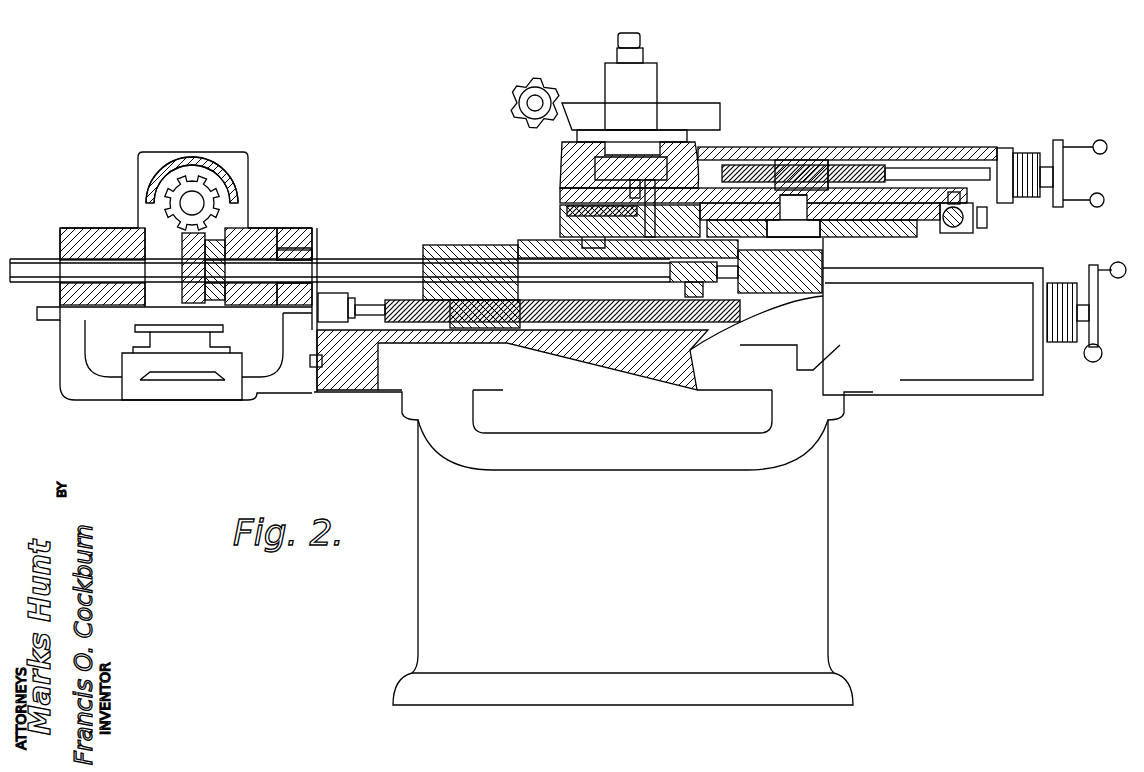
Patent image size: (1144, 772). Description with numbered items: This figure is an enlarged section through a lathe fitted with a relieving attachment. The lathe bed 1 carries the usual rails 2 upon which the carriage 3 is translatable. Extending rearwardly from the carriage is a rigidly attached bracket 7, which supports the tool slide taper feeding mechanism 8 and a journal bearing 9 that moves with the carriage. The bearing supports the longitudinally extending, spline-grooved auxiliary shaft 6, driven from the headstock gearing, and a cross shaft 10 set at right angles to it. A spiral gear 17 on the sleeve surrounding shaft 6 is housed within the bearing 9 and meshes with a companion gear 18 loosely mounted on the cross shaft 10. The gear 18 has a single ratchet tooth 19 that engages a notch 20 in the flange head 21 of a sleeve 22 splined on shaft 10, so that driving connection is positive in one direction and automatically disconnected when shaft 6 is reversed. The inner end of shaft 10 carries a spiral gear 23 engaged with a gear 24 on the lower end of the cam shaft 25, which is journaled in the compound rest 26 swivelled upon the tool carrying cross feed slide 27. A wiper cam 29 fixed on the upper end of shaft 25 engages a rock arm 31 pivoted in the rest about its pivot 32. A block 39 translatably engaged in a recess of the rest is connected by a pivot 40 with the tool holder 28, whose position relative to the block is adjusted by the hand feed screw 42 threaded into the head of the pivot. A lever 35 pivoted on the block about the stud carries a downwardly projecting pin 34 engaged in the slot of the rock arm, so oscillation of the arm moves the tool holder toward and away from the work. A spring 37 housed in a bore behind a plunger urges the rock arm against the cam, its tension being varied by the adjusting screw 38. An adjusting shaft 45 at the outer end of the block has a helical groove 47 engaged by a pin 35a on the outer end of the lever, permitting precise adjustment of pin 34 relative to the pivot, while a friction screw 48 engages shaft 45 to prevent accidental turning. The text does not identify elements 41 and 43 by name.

The bed 1 is at (822, 462).
The rails 2 is at (500, 375).
The carriage 3 is at (590, 360).
The shaft 6 is at (200, 198).
The bracket 7 is at (283, 392).
The tool slide taper feeding mechanism 8 is at (158, 380).
The journal bearing 9 is at (262, 245).
The shaft 10 is at (335, 262).
The spiral gear 17 is at (202, 175).
The gear 18 is at (205, 305).
The ratchet tooth 19 is at (222, 250).
The notch 20 is at (232, 262).
The flange head 21 is at (300, 246).
The sleeve 22 is at (300, 262).
The spiral gear 23 is at (700, 297).
The gear 24 is at (690, 297).
The cam shaft 25 is at (740, 188).
The compound rest 26 is at (575, 222).
The cross feed slide 27 is at (455, 245).
The tool holder 28 is at (870, 188).
The wiper cam 29 is at (715, 188).
The rock arm 31 is at (678, 188).
The pivot 32 is at (633, 182).
The pin 34 is at (650, 182).
The lever 35 is at (910, 188).
The pin 35a is at (955, 196).
The spring 37 is at (572, 193).
The adjusting screw 38 is at (565, 205).
The block 39 is at (880, 237).
The pivot 40 is at (840, 165).
The nut 41 is at (826, 160).
The hand feed screw 42 is at (578, 103).
The cutter 43 is at (528, 82).
The adjusting shaft 45 is at (950, 228).
The helical groove 47 is at (968, 228).
The friction device 48 is at (988, 218).